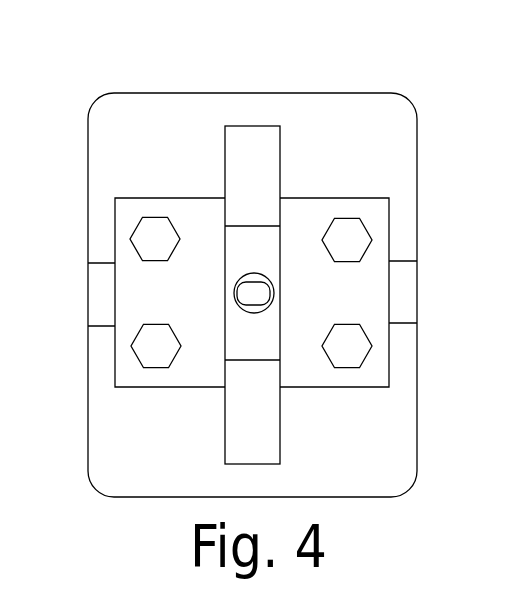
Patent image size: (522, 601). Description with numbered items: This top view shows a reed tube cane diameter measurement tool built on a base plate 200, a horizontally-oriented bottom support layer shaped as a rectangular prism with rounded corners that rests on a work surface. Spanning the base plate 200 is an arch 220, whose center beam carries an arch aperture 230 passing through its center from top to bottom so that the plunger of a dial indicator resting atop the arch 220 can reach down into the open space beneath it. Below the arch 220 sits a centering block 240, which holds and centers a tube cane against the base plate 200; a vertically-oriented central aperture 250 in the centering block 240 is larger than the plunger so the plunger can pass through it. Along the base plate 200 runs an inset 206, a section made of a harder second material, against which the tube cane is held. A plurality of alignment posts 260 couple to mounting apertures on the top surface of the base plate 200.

The base plate 200 is at (130, 500).
The inset 206 is at (408, 272).
The arch 220 is at (243, 147).
The arch aperture 230 is at (250, 273).
The centering block 240 is at (120, 215).
The central aperture 250 is at (261, 305).
The alignment posts 260 is at (152, 247).